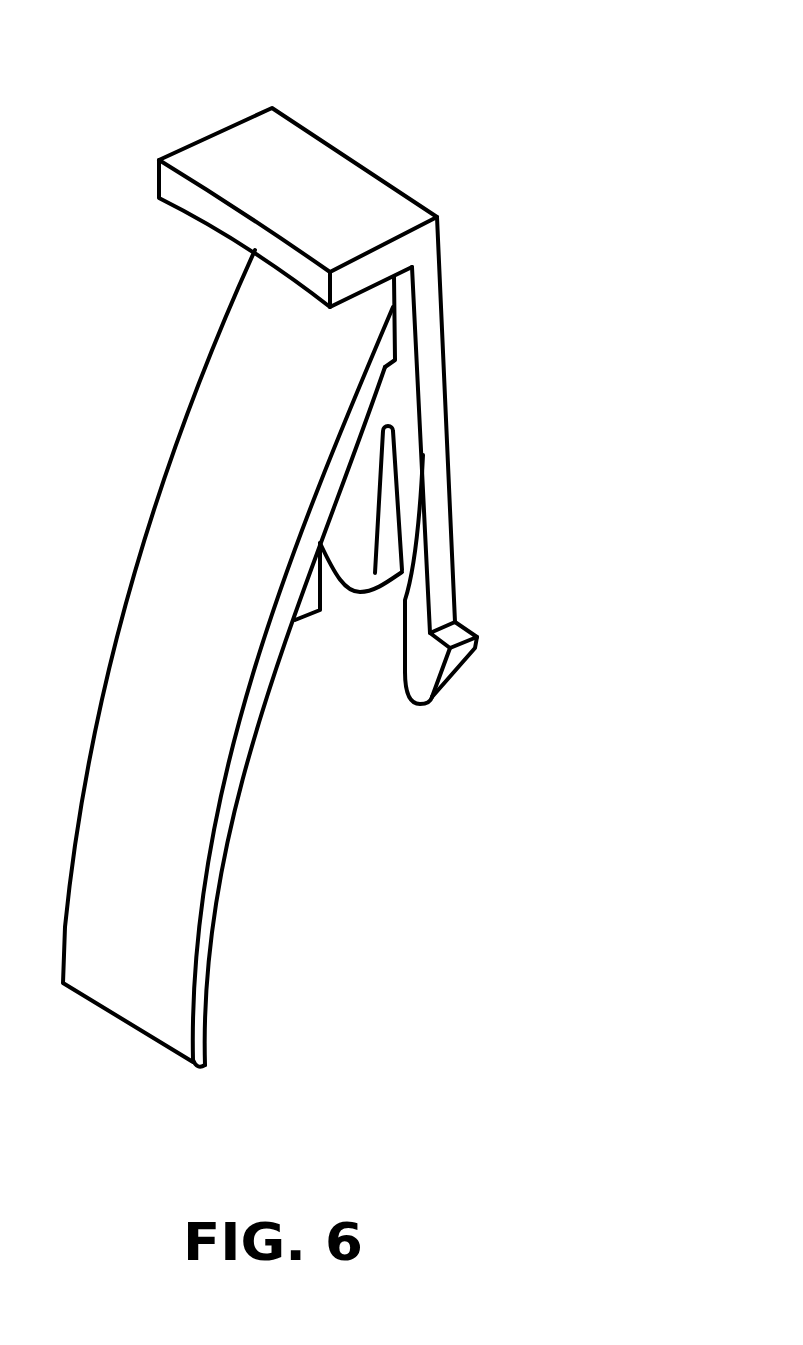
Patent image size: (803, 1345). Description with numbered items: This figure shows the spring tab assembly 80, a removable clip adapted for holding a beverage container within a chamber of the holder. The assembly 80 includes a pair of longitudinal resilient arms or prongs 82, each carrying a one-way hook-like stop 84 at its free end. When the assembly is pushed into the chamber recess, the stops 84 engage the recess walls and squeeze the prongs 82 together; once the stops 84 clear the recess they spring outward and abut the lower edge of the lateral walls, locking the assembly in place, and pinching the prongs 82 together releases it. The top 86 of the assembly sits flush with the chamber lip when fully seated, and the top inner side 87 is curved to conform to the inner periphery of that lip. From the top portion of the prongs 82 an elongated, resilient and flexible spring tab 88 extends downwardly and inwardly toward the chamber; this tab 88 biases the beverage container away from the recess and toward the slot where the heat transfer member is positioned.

The spring tab assembly 80 is at (507, 248).
The longitudinal resilient arms or prongs 82 is at (435, 438).
The one-way hook-like stop 84 is at (457, 668).
The top 86 is at (322, 180).
The top inner side 87 is at (217, 207).
The spring tab 88 is at (188, 761).